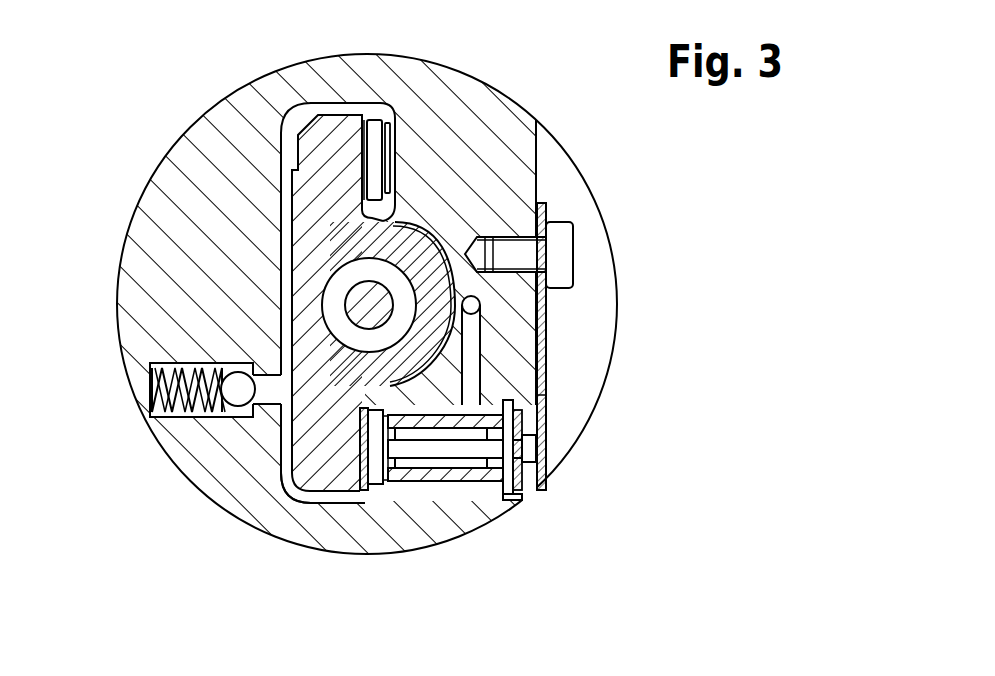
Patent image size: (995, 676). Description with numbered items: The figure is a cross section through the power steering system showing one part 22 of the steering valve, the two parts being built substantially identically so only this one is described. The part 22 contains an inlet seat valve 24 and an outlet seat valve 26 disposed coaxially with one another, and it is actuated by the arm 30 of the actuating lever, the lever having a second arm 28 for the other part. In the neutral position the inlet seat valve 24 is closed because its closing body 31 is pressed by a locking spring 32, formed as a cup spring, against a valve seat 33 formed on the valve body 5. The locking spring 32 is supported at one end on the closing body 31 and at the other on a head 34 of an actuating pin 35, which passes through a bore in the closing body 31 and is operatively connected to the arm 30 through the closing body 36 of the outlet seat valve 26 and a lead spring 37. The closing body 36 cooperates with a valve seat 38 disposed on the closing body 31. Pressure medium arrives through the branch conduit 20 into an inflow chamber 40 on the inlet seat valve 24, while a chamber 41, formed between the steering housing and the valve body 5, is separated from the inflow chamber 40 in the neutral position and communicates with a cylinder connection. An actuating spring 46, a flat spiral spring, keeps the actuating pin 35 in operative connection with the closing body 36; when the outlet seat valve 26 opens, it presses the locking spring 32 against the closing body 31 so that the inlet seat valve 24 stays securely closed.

The valve body 5 is at (185, 198).
The branch conduit 20 is at (470, 363).
The part of the steering valve 22 is at (572, 484).
The inlet seat valve 24 is at (505, 500).
The outlet seat valve 26 is at (389, 505).
The arm 28 is at (318, 155).
The arm 30 is at (318, 443).
The closing body 31 is at (458, 483).
The locking spring 32 is at (518, 492).
The valve seat 33 is at (517, 495).
The head 34 is at (523, 450).
The actuating pin 35 is at (495, 447).
The closing body 36 is at (375, 483).
The lead spring 37 is at (363, 483).
The valve seat 38 is at (540, 397).
The inflow chamber 40 is at (470, 483).
The chamber 41 is at (595, 283).
The actuating spring 46 is at (546, 355).